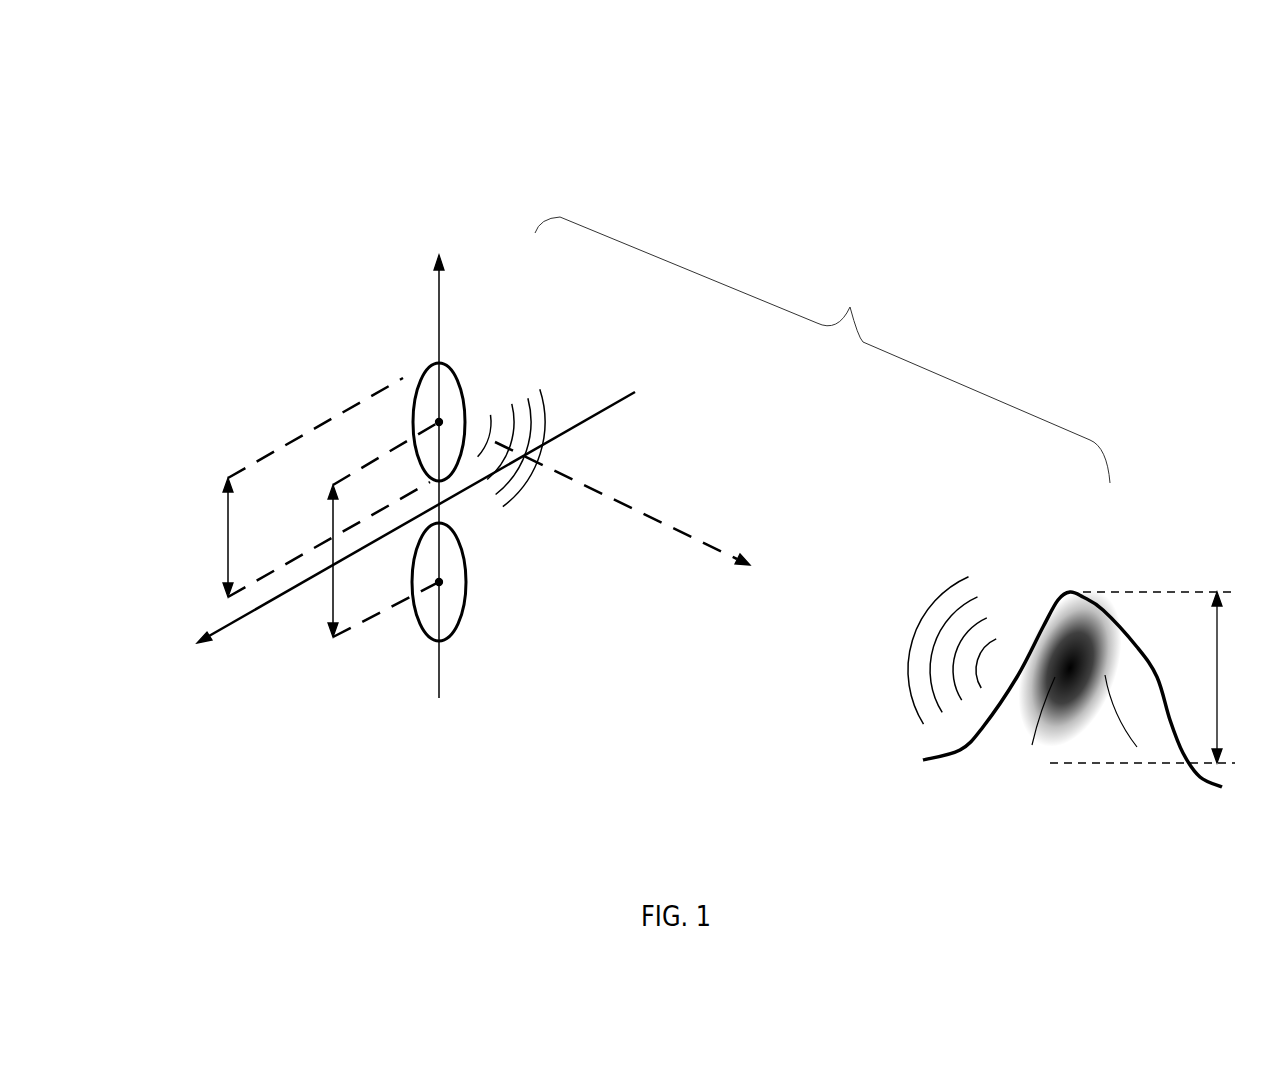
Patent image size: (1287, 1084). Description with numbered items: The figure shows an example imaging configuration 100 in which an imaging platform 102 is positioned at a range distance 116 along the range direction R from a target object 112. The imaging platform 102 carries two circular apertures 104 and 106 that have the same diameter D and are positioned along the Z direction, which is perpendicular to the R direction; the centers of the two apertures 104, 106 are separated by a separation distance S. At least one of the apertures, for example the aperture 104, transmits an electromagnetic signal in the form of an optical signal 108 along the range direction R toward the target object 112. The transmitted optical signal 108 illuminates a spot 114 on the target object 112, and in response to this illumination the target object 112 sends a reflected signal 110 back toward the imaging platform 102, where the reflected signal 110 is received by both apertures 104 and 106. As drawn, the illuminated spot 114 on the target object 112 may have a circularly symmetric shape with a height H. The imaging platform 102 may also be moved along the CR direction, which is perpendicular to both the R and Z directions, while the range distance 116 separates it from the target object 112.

The imaging configuration 100 is at (908, 175).
The imaging platform 102 is at (483, 295).
The circular aperture 104 is at (417, 390).
The circular aperture 106 is at (427, 635).
The optical signal 108 is at (516, 390).
The reflected signal 110 is at (1002, 608).
The target object 112 is at (968, 735).
The illuminated spot 114 is at (1050, 724).
The range distance 116 is at (822, 350).